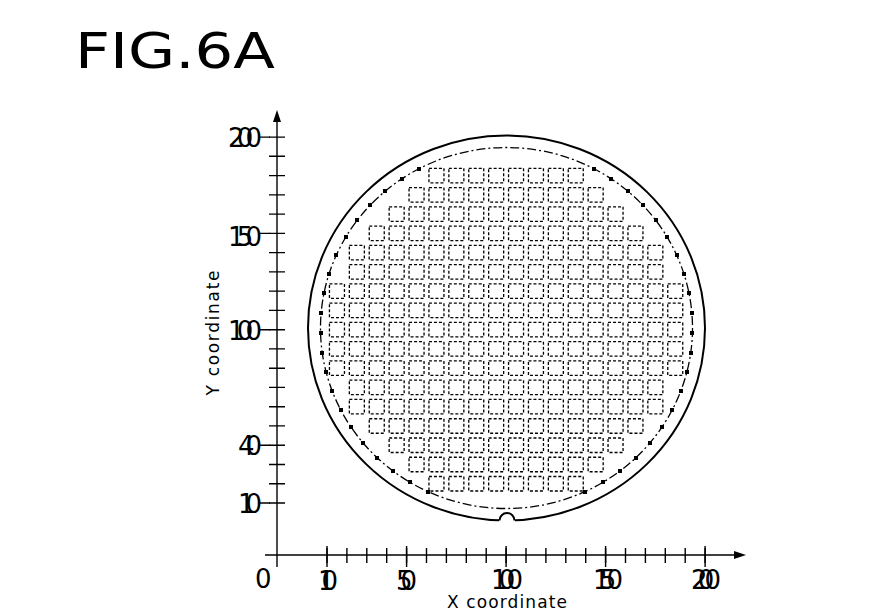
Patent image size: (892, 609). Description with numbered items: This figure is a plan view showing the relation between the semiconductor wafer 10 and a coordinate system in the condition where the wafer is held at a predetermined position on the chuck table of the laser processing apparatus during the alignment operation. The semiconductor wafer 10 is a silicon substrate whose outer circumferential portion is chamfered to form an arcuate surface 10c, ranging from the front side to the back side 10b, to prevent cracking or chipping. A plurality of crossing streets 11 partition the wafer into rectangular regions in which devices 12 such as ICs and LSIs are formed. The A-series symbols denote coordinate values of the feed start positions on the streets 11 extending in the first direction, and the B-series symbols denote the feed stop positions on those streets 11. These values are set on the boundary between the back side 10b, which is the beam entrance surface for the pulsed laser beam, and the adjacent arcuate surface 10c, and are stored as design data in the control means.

The semiconductor wafer 10 is at (532, 307).
The back side 10b is at (535, 317).
The arcuate surface 10c is at (505, 145).
The streets 11 is at (653, 397).
The devices 12 is at (697, 300).